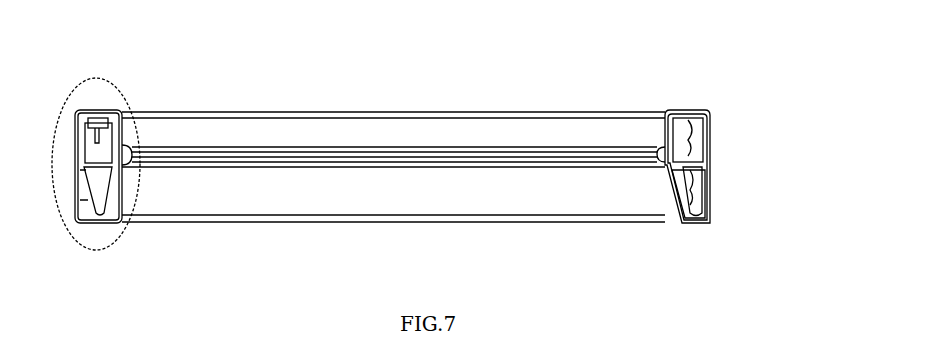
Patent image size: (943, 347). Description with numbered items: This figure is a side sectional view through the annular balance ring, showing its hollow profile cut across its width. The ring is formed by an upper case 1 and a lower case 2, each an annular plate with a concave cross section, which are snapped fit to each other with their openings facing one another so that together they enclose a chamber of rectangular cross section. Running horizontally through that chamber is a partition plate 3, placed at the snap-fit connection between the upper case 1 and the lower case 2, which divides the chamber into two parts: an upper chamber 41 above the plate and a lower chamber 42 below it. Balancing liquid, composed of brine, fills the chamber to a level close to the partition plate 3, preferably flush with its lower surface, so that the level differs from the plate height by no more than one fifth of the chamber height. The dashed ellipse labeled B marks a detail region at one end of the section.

The upper case 1 is at (730, 128).
The lower case 2 is at (730, 225).
The partition plate 3 is at (462, 167).
The upper chamber 41 is at (741, 126).
The lower chamber 42 is at (747, 197).
The detail region B is at (149, 135).